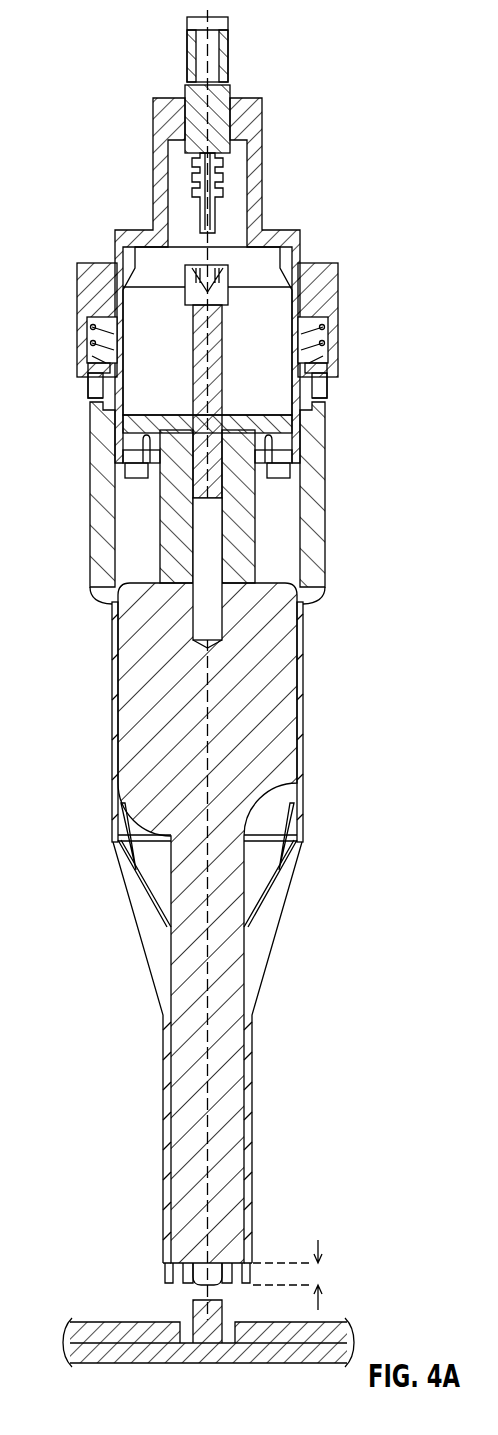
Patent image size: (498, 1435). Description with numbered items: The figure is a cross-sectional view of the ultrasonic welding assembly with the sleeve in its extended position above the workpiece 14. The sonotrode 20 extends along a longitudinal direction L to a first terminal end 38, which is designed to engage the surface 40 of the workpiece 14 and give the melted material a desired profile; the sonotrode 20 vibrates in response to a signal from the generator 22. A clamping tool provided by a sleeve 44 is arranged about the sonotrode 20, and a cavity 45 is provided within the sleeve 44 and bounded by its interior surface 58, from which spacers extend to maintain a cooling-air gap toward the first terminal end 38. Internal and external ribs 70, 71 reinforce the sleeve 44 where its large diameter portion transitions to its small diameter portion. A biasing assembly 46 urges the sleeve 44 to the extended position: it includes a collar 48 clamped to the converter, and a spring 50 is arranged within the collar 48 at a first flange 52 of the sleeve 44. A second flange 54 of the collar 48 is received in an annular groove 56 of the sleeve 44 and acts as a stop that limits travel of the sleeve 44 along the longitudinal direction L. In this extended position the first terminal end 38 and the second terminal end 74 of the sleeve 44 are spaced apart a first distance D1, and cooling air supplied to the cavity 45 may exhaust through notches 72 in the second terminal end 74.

The workpiece 14 is at (57, 1303).
The sonotrode 20 is at (141, 690).
The generator 22 is at (250, 307).
The first terminal end 38 is at (190, 1263).
The surface 40 is at (222, 1260).
The sleeve 44 is at (100, 556).
The cavity 45 is at (268, 568).
The biasing assembly 46 is at (207, 337).
The collar 48 is at (90, 272).
The spring 50 is at (88, 378).
The first flange 52 is at (318, 368).
The second flange 54 is at (326, 384).
The annular groove 56 is at (318, 398).
The interior surface 58 is at (120, 667).
The internal rib 70 is at (121, 833).
The external rib 71 is at (153, 927).
The notches 72 is at (187, 1288).
The second terminal end 74 is at (232, 1283).
The first distance D1 is at (319, 1244).
The longitudinal direction L is at (207, 710).